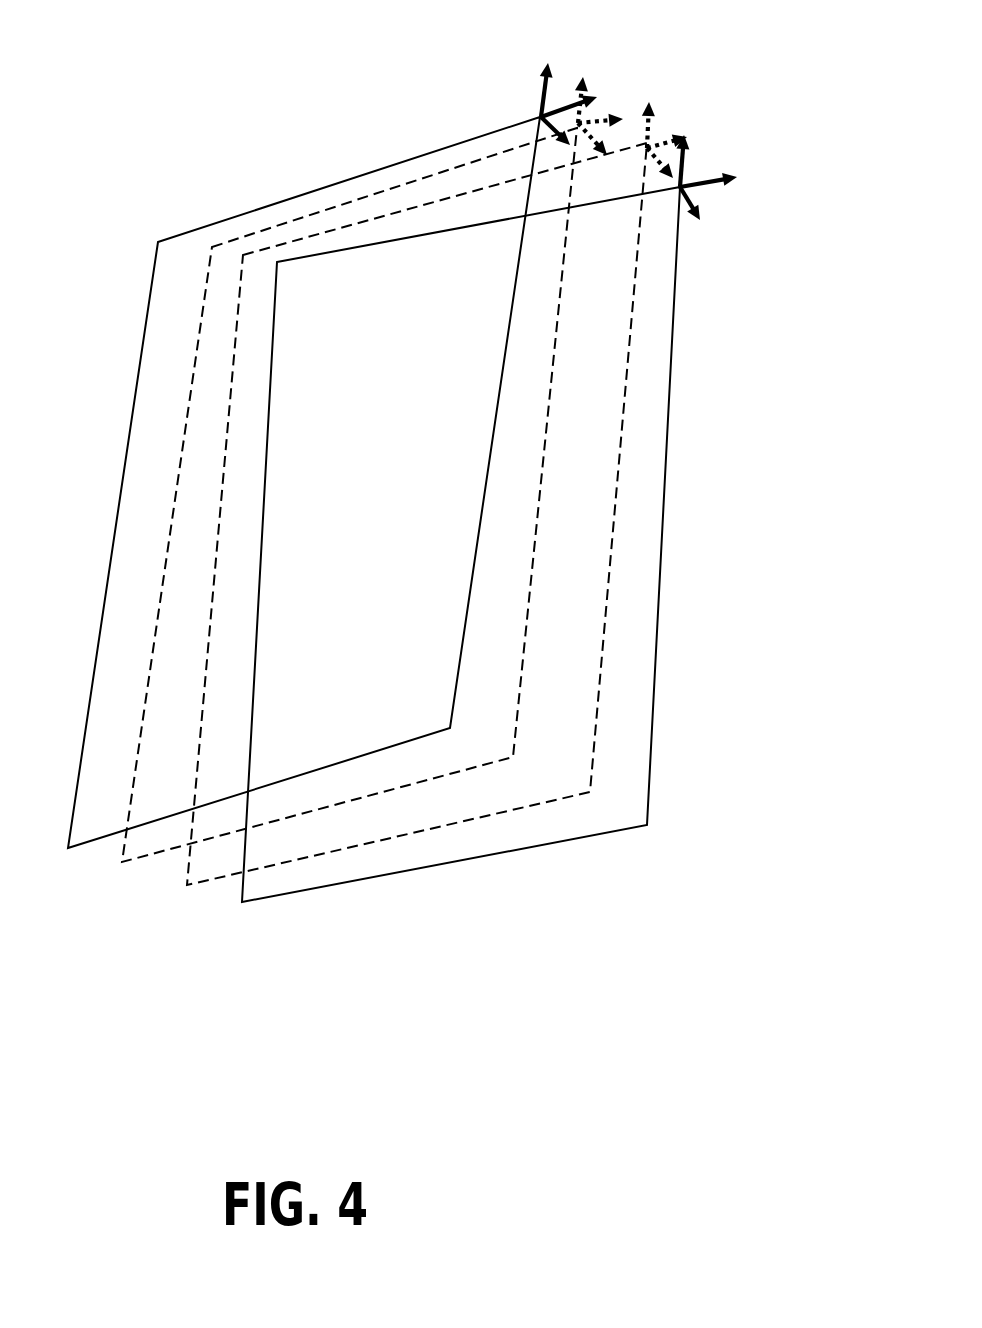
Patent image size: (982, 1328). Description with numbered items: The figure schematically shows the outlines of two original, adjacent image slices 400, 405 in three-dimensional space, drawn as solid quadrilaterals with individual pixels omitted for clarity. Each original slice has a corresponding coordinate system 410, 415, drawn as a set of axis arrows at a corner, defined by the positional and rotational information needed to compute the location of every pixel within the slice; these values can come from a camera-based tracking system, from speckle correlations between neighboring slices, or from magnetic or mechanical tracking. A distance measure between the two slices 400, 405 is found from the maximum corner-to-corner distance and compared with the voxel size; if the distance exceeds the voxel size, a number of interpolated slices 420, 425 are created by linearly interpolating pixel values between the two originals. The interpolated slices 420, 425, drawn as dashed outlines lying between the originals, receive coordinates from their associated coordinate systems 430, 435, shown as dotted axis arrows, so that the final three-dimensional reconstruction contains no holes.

The original slice 400 is at (153, 298).
The original slice 405 is at (263, 443).
The coordinate system 410 is at (527, 90).
The coordinate system 415 is at (693, 158).
The interpolated slice 420 is at (178, 463).
The interpolated slice 425 is at (207, 645).
The coordinate system 430 is at (603, 97).
The coordinate system 435 is at (672, 117).